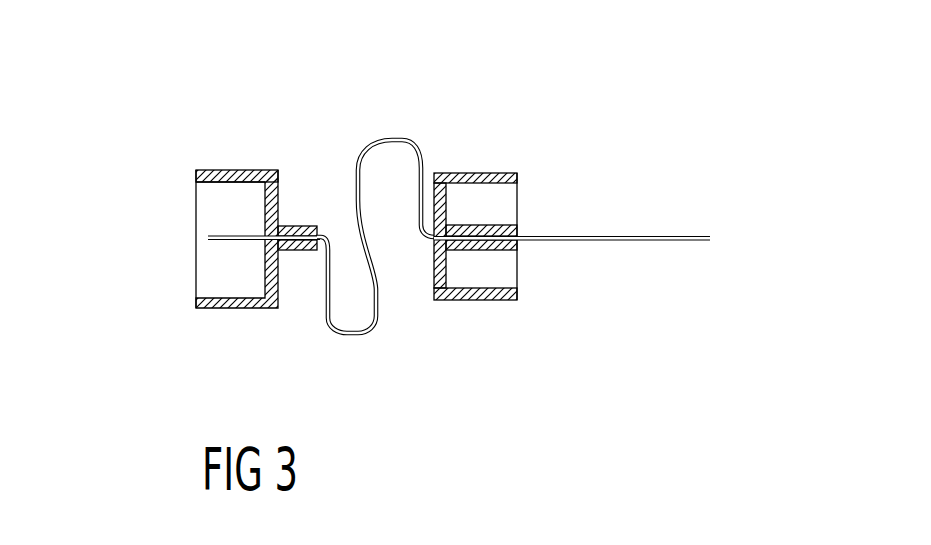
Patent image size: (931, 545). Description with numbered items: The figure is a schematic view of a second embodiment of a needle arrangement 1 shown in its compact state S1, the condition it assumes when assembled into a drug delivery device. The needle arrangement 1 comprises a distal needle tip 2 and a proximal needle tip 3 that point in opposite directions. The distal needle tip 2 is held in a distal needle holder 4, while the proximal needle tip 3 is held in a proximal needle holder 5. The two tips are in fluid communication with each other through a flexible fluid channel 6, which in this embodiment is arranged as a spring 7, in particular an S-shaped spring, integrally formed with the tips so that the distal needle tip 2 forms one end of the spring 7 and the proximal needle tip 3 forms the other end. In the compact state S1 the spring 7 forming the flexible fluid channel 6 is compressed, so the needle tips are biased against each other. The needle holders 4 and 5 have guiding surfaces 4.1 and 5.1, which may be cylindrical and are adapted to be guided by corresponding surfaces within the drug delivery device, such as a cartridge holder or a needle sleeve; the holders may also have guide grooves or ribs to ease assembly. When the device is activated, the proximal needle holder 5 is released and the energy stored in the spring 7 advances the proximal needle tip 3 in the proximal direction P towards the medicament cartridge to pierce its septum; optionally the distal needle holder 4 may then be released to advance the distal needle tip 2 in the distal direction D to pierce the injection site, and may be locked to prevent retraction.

The needle arrangement 1 is at (420, 190).
The distal needle tip 2 is at (695, 238).
The proximal needle tip 3 is at (210, 238).
The distal needle holder 4 is at (477, 223).
The guiding surface 4.1 is at (480, 172).
The proximal needle holder 5 is at (256, 224).
The guiding surface 5.1 is at (260, 169).
The flexible fluid channel 6 is at (375, 181).
The spring 7 is at (400, 139).
The compact state S1 is at (194, 224).
The proximal direction P is at (129, 242).
The distal direction D is at (761, 246).